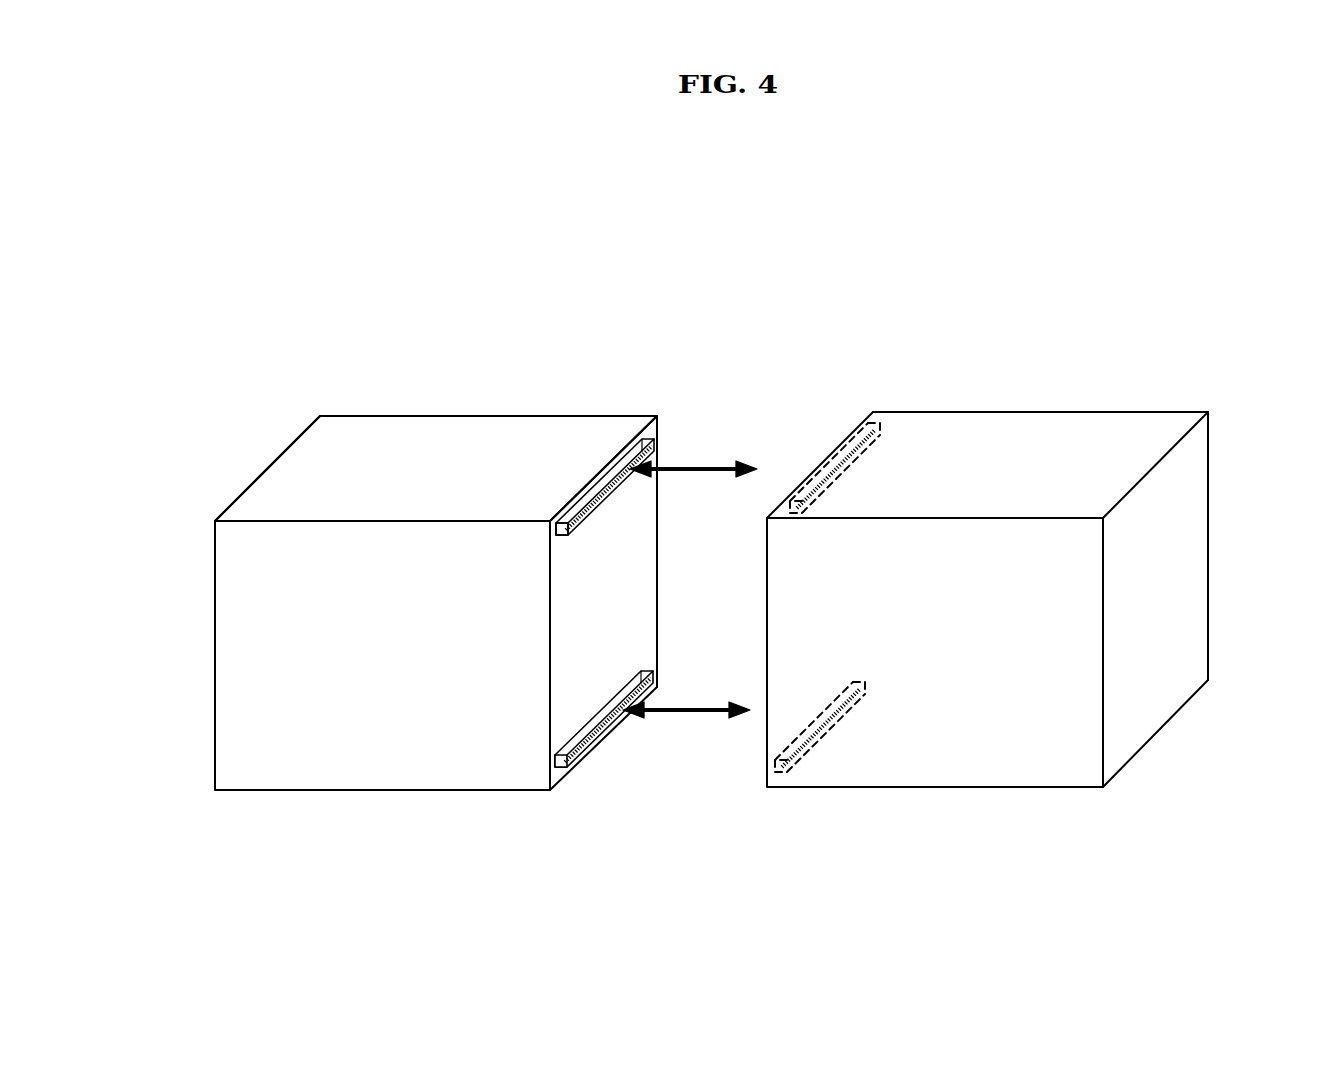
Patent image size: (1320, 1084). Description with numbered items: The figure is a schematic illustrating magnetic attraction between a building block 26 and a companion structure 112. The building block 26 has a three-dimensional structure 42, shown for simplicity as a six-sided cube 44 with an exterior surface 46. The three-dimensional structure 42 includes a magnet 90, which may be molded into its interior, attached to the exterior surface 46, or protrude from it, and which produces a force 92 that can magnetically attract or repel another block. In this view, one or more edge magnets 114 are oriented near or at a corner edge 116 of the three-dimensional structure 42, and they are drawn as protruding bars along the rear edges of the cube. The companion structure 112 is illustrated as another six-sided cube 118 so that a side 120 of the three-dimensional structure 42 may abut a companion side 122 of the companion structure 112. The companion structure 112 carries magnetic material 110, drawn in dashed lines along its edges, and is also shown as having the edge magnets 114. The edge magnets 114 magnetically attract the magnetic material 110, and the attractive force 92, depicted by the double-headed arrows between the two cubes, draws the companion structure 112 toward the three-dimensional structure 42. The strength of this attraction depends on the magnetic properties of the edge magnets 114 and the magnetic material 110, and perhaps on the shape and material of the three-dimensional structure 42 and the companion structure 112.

The building block 26 is at (605, 216).
The three-dimensional structure 42 is at (213, 554).
The six-sided cube 44 is at (320, 416).
The exterior surface 46 is at (390, 437).
The corner edge 116 is at (661, 415).
The magnet 90 is at (653, 457).
The edge magnets 114 is at (564, 508).
The side 120 is at (565, 775).
The force 92 is at (716, 474).
The companion structure 112 is at (1206, 411).
The six-sided cube 118 is at (1209, 545).
The companion side 122 is at (837, 445).
The magnetic material 110 is at (828, 735).